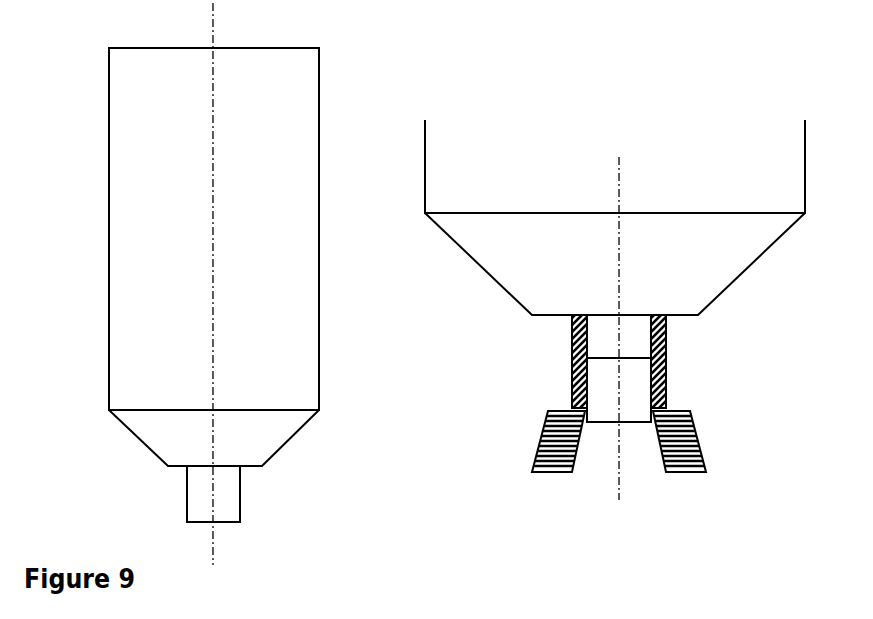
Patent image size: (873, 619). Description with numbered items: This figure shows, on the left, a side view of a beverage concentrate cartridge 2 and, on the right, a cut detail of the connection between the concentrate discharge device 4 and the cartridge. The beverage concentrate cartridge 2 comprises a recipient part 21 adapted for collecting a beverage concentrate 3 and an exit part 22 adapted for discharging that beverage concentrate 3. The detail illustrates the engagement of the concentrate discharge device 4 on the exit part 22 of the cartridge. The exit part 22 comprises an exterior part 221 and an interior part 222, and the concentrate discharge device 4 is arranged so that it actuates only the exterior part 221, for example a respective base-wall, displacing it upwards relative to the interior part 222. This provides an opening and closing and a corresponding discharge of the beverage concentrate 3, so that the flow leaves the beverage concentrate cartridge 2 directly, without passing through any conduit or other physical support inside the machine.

The beverage concentrate cartridge 2 is at (457, 244).
The recipient part 21 is at (82, 229).
The beverage concentrate 3 is at (214, 229).
The exit part 22 is at (185, 496).
The exterior part 221 is at (652, 363).
The interior part 222 is at (619, 390).
The concentrate discharge device 4 is at (633, 441).